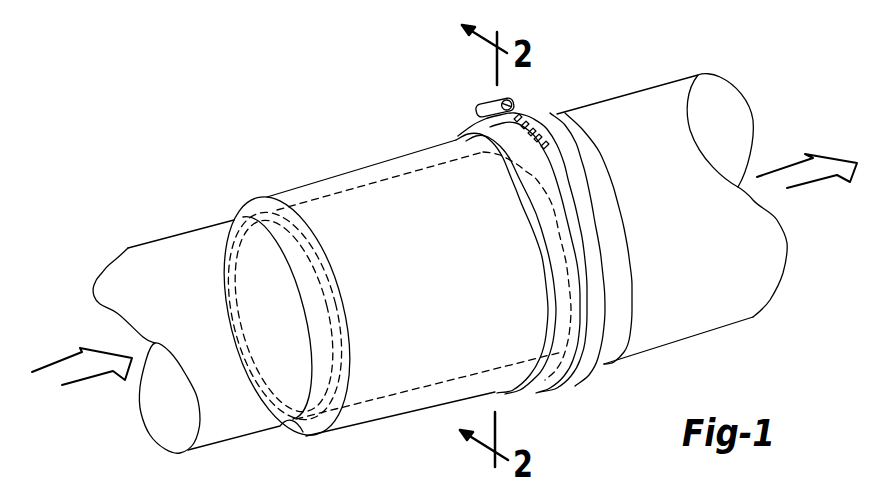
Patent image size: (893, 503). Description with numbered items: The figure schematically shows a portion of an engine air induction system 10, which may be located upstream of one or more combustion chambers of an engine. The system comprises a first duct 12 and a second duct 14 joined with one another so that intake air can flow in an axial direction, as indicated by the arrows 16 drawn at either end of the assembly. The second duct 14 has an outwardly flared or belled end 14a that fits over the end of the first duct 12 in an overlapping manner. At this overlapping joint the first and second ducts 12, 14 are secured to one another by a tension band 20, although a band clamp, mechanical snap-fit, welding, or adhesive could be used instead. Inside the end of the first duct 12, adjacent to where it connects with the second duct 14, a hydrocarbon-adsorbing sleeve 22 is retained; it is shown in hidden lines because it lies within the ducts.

The engine air induction system 10 is at (243, 88).
The first duct 12 is at (167, 250).
The second duct 14 is at (637, 110).
The belled end 14a is at (452, 132).
The arrows 16 is at (85, 384).
The tension band 20 is at (595, 338).
The hydrocarbon-adsorbing sleeve 22 is at (353, 200).